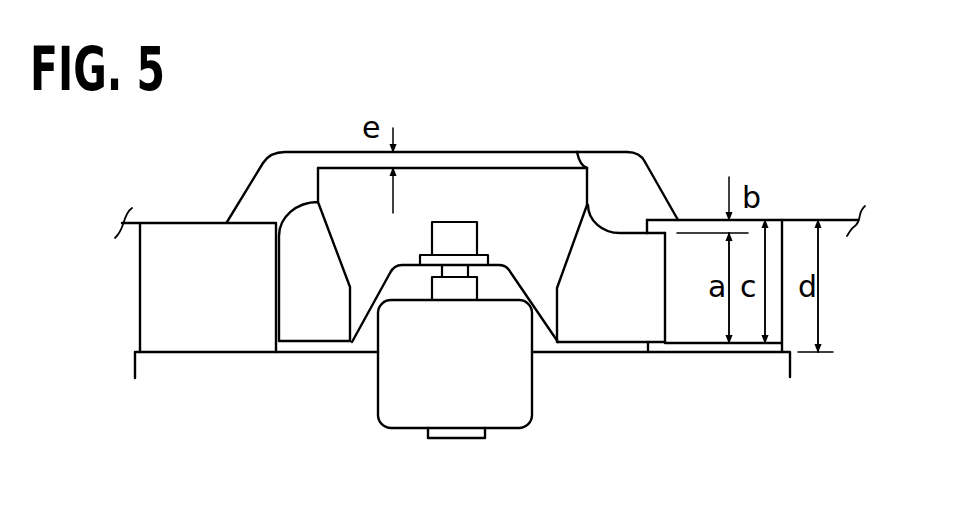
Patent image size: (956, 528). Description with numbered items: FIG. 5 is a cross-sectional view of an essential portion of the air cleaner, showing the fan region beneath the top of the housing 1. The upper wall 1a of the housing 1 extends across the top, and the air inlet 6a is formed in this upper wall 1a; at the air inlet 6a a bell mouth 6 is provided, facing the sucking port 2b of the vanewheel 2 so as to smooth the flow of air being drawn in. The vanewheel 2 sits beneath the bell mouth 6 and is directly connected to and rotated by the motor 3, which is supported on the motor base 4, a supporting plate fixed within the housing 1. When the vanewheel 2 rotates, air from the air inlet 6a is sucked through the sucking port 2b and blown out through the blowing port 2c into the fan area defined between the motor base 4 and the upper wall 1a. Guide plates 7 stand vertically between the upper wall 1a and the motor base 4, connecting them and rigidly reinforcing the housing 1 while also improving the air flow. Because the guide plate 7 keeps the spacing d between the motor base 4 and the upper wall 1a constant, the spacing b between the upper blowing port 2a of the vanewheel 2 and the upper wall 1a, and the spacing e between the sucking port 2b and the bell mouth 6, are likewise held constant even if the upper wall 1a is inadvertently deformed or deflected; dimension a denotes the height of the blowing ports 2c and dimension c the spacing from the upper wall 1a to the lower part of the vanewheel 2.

The housing 1 is at (780, 220).
The upper wall 1a is at (833, 222).
The vanewheel 2 is at (588, 187).
The upper blowing port 2a is at (603, 222).
The sucking port 2b is at (597, 153).
The blowing port 2c is at (663, 245).
The motor 3 is at (517, 428).
The motor base 4 is at (602, 352).
The bell mouth 6 is at (287, 152).
The air inlet 6a is at (577, 152).
The guide plate 7 is at (207, 338).